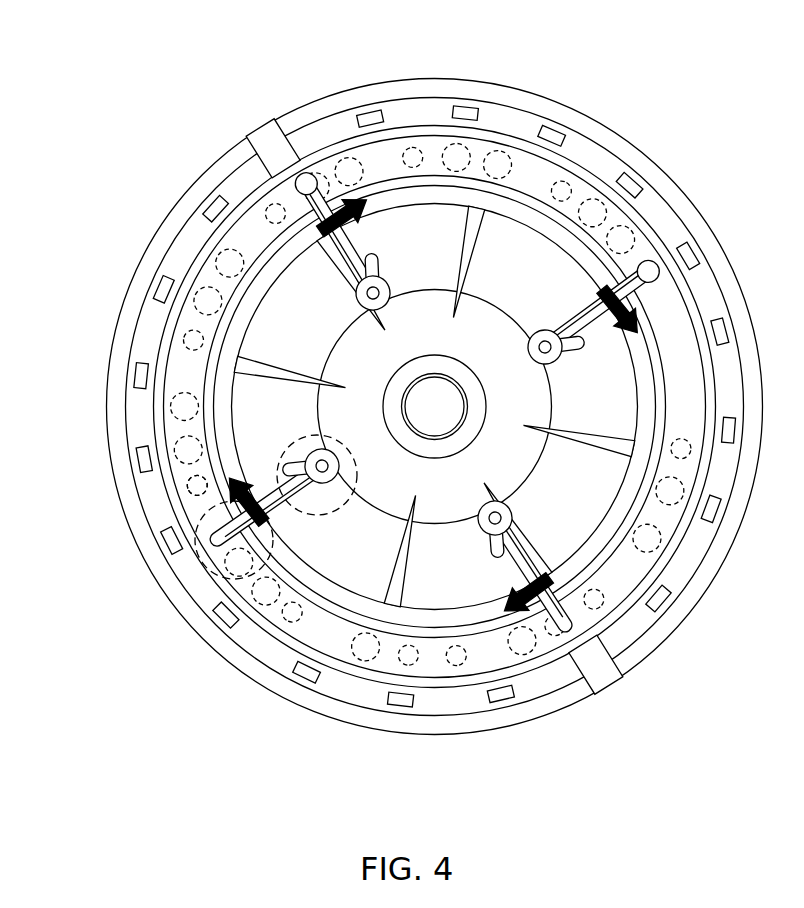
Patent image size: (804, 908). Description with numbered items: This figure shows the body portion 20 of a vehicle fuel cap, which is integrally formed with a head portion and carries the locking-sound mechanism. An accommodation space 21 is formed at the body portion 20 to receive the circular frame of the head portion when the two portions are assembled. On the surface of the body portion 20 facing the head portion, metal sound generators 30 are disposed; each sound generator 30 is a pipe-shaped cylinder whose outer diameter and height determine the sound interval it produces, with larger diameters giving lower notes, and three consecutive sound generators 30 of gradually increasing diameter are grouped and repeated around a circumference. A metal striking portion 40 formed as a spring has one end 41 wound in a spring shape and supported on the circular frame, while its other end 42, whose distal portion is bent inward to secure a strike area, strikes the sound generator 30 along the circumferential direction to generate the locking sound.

The body portion 20 is at (180, 205).
The accommodation space 21 is at (545, 257).
The sound generator 30 is at (517, 658).
The striking portion 40 is at (377, 435).
The one end 41 is at (327, 517).
The other end 42 is at (205, 548).